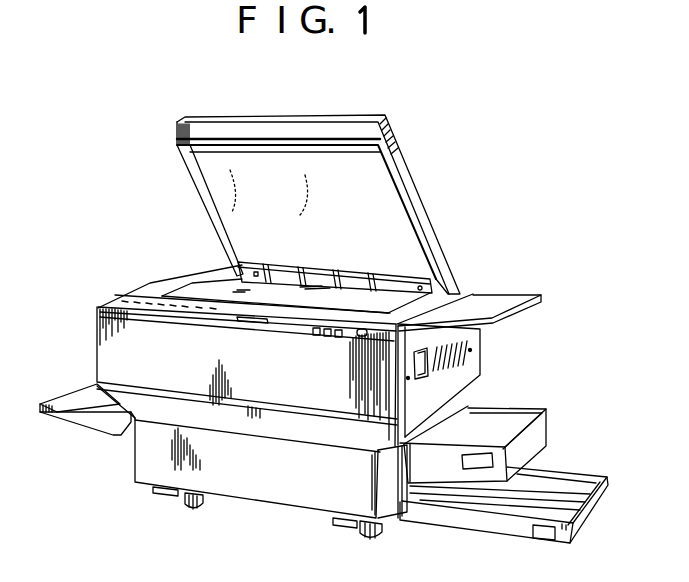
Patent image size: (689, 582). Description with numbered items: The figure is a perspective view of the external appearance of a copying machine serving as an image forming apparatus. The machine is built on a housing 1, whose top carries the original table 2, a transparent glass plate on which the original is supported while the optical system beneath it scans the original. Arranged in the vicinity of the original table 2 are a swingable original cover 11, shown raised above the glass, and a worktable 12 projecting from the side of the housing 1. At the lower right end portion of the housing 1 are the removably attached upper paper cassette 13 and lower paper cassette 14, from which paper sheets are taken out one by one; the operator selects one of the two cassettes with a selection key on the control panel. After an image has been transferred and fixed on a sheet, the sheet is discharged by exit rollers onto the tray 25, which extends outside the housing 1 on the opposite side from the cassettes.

The housing 1 is at (243, 478).
The original table 2 is at (217, 293).
The original cover 11 is at (431, 197).
The worktable 12 is at (540, 283).
The upper paper cassette 13 is at (548, 420).
The lower paper cassette 14 is at (590, 514).
The tray 25 is at (98, 440).